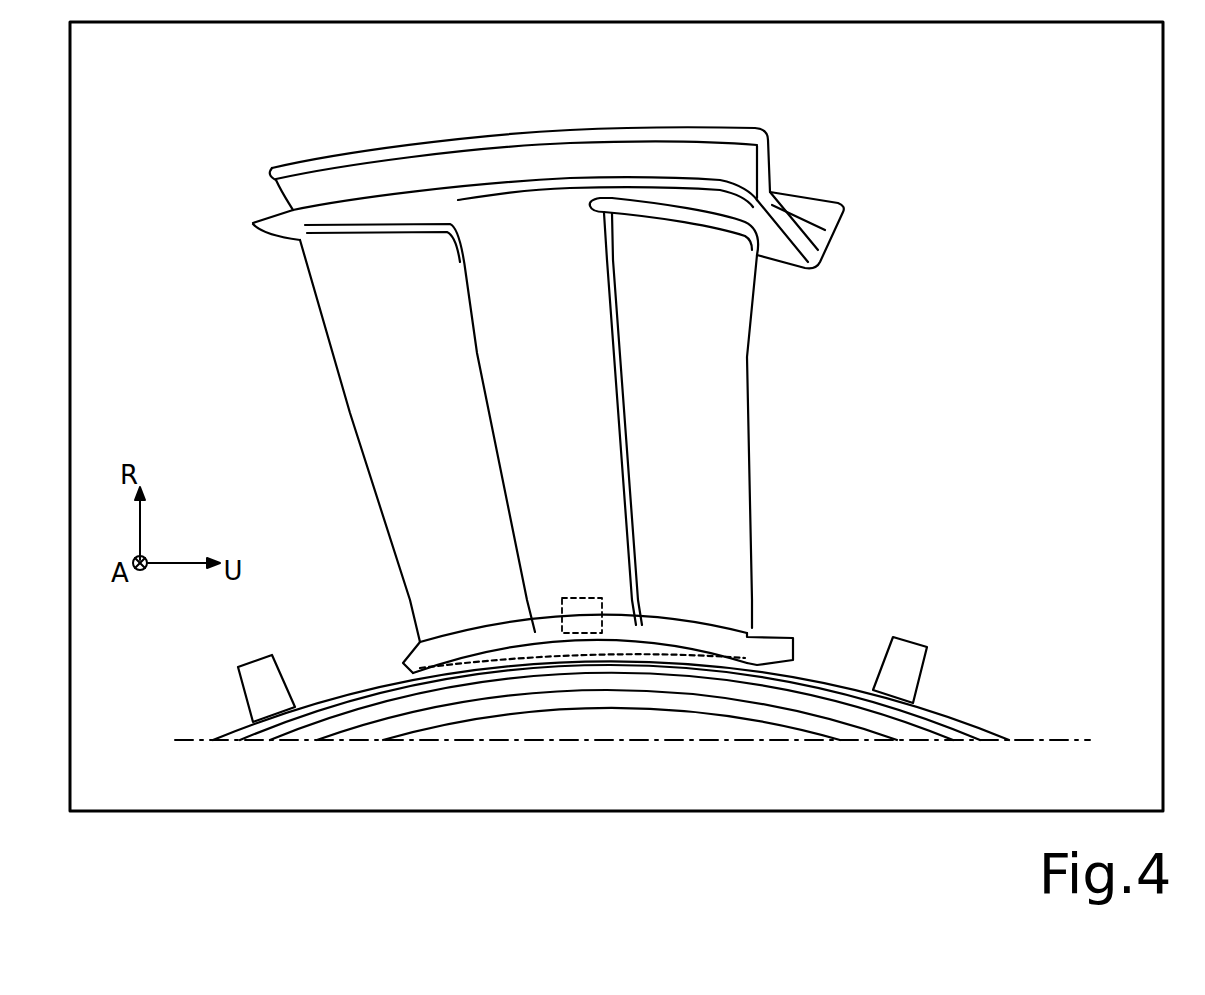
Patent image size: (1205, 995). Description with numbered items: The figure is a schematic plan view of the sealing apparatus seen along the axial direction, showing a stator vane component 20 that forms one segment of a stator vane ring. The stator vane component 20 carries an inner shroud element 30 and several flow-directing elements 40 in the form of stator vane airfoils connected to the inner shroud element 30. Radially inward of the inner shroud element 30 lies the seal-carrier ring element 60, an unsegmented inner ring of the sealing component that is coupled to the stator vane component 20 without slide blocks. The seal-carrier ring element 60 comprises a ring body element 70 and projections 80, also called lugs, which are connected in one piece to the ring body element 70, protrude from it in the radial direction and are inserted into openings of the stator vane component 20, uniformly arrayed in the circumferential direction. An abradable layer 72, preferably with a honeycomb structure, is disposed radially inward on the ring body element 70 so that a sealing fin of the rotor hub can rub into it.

The stator vane component 20 is at (756, 112).
The inner shroud element 30 is at (770, 627).
The flow-directing element 40 is at (372, 412).
The seal-carrier ring element 60 is at (1026, 726).
The ring body element 70 is at (963, 727).
The abradable layer 72 is at (808, 726).
The projections 80 is at (258, 676).